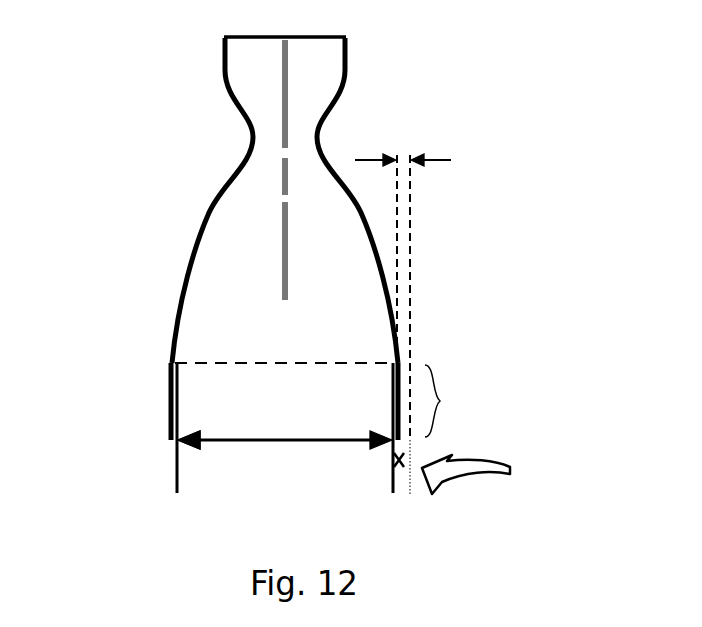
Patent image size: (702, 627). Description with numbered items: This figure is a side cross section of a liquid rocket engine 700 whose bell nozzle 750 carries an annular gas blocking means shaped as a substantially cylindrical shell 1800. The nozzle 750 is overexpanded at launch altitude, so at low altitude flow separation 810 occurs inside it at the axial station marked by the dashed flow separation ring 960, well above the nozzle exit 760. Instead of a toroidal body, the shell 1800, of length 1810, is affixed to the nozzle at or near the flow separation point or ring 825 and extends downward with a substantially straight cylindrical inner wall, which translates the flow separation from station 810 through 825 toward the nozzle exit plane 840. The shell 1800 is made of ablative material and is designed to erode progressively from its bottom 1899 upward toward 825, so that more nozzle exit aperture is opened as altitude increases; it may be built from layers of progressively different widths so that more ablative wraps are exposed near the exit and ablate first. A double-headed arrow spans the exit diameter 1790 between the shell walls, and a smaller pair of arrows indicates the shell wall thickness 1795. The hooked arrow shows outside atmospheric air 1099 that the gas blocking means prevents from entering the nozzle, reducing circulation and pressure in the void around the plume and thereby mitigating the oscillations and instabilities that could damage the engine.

The liquid rocket engine 700 is at (222, 48).
The nozzle 750 is at (212, 192).
The nozzle exit 760 is at (178, 441).
The flow separation 810 is at (388, 268).
The flow separation point 825 is at (405, 358).
The nozzle exit plane 840 is at (392, 440).
The flow separation ring 960 is at (362, 362).
The atmospheric air 1099 is at (498, 468).
The exit diameter 1790 is at (343, 444).
The wall thickness 1795 is at (404, 148).
The cylindrical shell 1800 is at (172, 413).
The length of shell 1810 is at (470, 401).
The bottom of shell 1899 is at (178, 440).